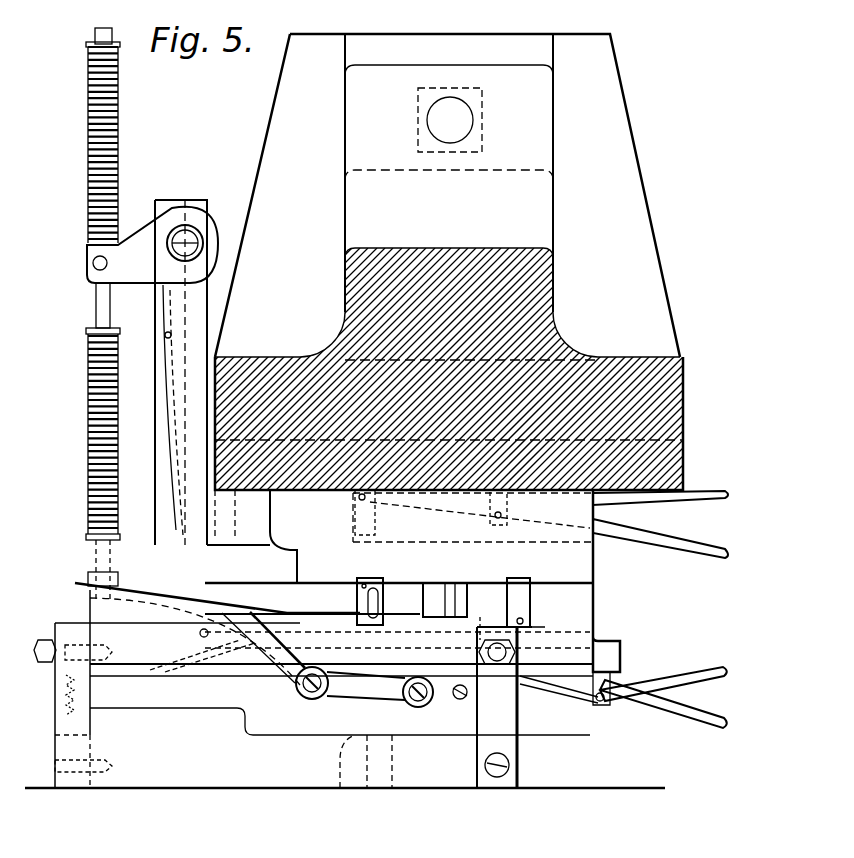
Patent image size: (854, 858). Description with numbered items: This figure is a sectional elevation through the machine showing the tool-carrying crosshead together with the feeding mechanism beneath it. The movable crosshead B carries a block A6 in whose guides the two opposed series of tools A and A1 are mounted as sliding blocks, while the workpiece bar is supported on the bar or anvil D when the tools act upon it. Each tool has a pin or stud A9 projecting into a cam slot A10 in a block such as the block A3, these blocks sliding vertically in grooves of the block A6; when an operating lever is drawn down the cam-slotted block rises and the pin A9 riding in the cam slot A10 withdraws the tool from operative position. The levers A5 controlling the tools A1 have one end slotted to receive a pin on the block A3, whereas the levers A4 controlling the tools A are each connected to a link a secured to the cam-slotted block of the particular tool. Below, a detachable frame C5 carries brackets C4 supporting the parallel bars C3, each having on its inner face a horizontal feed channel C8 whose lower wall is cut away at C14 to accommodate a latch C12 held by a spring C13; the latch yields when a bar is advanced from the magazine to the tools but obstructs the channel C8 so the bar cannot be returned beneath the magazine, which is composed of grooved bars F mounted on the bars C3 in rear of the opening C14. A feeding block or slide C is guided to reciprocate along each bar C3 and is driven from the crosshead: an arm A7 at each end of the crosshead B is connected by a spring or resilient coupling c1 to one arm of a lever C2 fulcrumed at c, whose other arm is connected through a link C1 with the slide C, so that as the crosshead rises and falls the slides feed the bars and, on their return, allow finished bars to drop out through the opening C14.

The movable crosshead B is at (355, 230).
The magazine F is at (155, 410).
The lever C2 is at (172, 455).
The fulcrum c is at (190, 230).
The spring or resilient coupling c1 is at (88, 212).
The arm A7 is at (105, 566).
The tools A is at (380, 606).
The link a is at (355, 556).
The feeding block or slide C is at (448, 605).
The link C1 is at (462, 607).
The tools A1 is at (480, 625).
The cam-slotted block A3 is at (525, 632).
The block A6 is at (655, 464).
The pin or stud A9 is at (522, 622).
The cam slot A10 is at (578, 668).
The lever A4 is at (710, 553).
The lever A5 is at (705, 722).
The bar or anvil D is at (548, 706).
The bracket C4 is at (65, 715).
The detachable frame C5 is at (390, 761).
The spring C13 is at (186, 634).
The latch C12 is at (213, 640).
The cut-away or opening C14 is at (268, 642).
The bar C3 is at (298, 690).
The groove or feed channel C8 is at (340, 700).